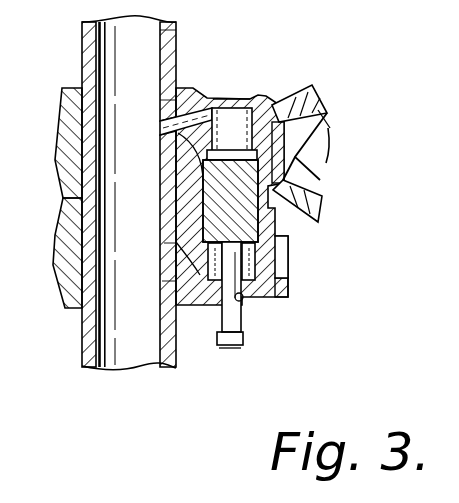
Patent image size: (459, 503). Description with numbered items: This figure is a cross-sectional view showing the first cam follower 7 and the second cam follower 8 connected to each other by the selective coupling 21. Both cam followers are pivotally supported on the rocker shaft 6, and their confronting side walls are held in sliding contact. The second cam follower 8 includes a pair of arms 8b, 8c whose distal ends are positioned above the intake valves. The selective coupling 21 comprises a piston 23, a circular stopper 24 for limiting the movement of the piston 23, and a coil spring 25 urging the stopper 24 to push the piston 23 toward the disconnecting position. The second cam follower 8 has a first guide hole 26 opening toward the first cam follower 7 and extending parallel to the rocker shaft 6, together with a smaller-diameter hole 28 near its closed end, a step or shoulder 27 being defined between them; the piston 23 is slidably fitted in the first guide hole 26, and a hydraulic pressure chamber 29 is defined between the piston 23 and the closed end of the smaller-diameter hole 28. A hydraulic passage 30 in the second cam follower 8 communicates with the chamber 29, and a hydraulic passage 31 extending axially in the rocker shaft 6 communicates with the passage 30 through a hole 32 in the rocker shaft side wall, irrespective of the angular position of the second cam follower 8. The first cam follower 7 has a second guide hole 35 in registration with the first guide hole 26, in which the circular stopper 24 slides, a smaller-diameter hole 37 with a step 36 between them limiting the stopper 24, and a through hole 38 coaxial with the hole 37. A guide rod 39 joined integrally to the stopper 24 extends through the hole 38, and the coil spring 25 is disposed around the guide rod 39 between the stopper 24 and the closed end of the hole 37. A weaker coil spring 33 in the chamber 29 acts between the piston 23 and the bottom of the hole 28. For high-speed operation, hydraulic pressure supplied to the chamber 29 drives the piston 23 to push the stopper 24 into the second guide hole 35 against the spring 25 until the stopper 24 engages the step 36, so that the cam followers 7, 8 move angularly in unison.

The rocker shaft 6 is at (82, 345).
The first cam follower 7 is at (60, 232).
The second cam follower 8 is at (63, 133).
The arm 8b is at (322, 120).
The arm 8c is at (323, 195).
The selective coupling 21 is at (254, 337).
The piston 23 is at (244, 213).
The circular stopper 24 is at (283, 247).
The coil spring 25 is at (162, 281).
The first guide hole 26 is at (321, 179).
The step or shoulder 27 is at (270, 150).
The smaller-diameter hole 28 is at (316, 104).
The hydraulic pressure chamber 29 is at (229, 118).
The hydraulic passage 30 is at (163, 103).
The hydraulic passage 31 is at (156, 34).
The hole 32 is at (167, 132).
The coil spring 33 is at (249, 110).
The second guide hole 35 is at (266, 225).
The step or shoulder 36 is at (164, 243).
The smaller-diameter hole 37 is at (272, 283).
The through hole 38 is at (243, 302).
The guide rod 39 is at (228, 345).